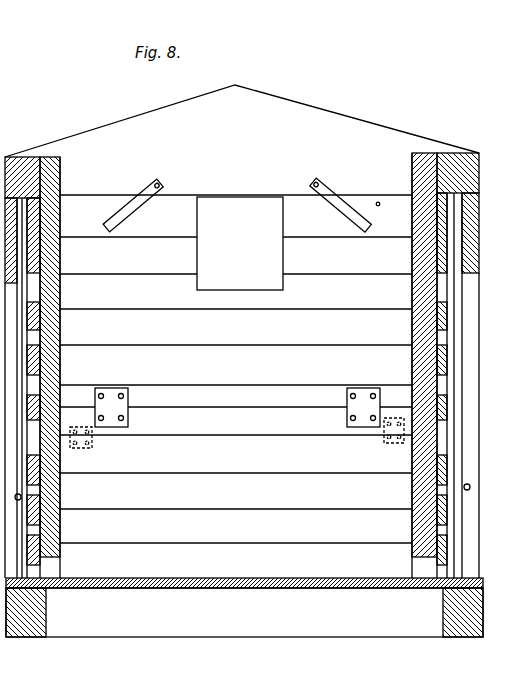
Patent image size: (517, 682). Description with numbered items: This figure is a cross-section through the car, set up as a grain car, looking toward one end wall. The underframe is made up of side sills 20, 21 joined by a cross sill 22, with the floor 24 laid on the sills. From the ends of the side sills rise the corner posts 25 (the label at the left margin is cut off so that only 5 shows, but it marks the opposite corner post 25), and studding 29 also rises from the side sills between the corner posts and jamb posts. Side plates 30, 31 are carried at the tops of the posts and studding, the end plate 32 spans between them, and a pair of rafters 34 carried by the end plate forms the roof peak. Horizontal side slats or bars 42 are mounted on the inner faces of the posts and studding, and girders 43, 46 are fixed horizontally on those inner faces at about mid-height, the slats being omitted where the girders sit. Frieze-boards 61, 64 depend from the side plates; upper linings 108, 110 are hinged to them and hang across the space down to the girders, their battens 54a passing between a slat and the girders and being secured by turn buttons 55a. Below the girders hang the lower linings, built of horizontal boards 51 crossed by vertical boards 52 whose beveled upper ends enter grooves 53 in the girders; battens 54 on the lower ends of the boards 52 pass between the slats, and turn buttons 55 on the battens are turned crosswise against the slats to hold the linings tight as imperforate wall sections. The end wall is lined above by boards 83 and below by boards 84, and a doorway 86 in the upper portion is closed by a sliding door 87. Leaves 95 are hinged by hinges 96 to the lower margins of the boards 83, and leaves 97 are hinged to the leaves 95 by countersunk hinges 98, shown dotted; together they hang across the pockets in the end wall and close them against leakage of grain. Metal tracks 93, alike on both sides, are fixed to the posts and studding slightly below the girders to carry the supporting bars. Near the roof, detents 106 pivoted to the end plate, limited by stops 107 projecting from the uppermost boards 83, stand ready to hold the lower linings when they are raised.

The frame 5 is at (20, 388).
The side sill 20 is at (46, 613).
The side sill 21 is at (443, 611).
The cross sill 22 is at (244, 612).
The floor 24 is at (236, 580).
The corner post 25 is at (480, 447).
The studding 29 is at (48, 536).
The side plate 30 is at (20, 170).
The side plate 31 is at (452, 165).
The end plate 32 is at (236, 182).
The rafter 34 is at (242, 121).
The side slat or bar 42 is at (62, 540).
The girder 43 is at (62, 373).
The girder 46 is at (420, 372).
The boards 51 is at (62, 487).
The boards 52 is at (62, 503).
The groove 53 is at (50, 385).
The cleat or batten 54 is at (46, 560).
The turn button 55 is at (275, 569).
The cleat or batten 54a is at (62, 336).
The turn button 55a is at (62, 312).
The frieze-board 61 is at (60, 183).
The frieze-board 64 is at (420, 175).
The boards 83 is at (236, 360).
The boards 84 is at (236, 491).
The doorway 86 is at (284, 256).
The sliding door 87 is at (240, 243).
The metal track 93 is at (60, 452).
The leaf 95 is at (236, 416).
The hinge 96 is at (128, 398).
The leaf 97 is at (236, 450).
The hinge 98 is at (92, 443).
The detent 106 is at (150, 186).
The stop 107 is at (356, 222).
The upper lining 108 is at (62, 268).
The upper lining 110 is at (412, 262).